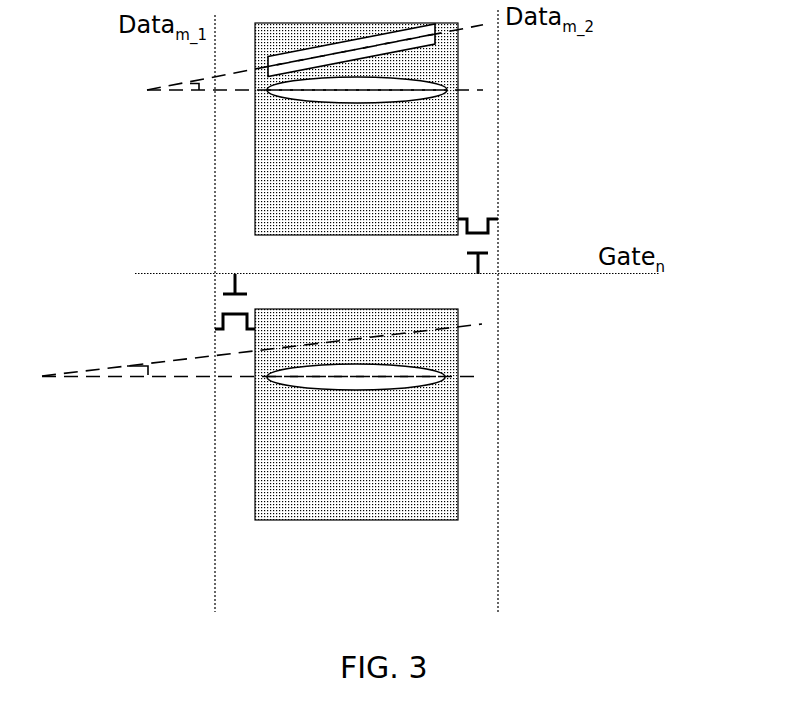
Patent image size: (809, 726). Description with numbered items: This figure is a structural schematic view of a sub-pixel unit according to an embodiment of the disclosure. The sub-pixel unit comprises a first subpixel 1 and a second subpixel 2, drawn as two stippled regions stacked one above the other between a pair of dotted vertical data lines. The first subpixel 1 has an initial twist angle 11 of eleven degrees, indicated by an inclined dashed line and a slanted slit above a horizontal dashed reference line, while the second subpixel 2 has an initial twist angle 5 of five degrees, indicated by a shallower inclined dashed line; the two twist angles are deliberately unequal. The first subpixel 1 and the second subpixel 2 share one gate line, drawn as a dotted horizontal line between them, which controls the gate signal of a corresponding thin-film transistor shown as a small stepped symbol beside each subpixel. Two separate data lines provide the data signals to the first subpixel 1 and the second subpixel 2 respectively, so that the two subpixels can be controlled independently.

The first subpixel 1 is at (376, 148).
The second subpixel 2 is at (336, 397).
The initial twist angle θ1 11 is at (296, 80).
The initial twist angle θ2 5 is at (262, 376).